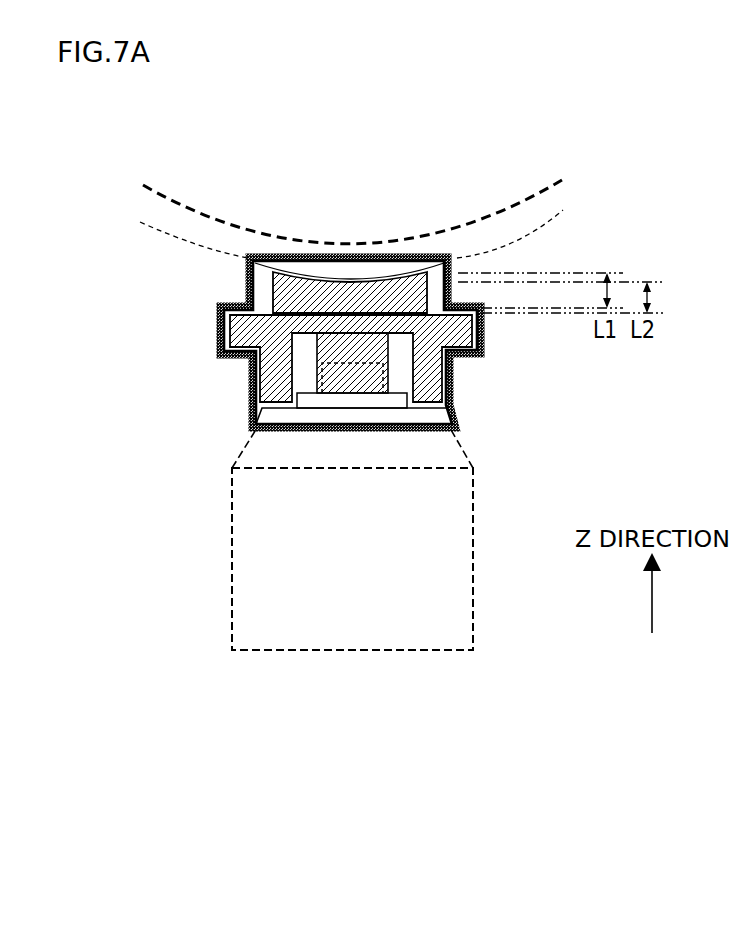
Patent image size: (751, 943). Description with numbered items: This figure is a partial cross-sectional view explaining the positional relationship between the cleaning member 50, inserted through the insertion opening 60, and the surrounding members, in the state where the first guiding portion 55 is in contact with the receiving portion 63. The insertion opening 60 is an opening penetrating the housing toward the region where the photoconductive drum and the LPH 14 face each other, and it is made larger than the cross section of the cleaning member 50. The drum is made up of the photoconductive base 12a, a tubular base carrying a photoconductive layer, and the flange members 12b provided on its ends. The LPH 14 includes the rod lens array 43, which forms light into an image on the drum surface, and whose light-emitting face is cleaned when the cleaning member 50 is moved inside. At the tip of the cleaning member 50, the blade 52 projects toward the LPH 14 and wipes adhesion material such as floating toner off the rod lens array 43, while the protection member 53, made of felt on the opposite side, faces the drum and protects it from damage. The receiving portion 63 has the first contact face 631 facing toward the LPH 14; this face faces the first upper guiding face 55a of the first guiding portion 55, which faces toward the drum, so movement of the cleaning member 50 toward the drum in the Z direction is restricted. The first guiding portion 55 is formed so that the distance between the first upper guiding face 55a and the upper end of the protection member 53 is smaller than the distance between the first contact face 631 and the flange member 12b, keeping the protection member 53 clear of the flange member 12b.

The photoconductive base 12a is at (553, 189).
The flange member 12b is at (435, 263).
The LPH 14 is at (505, 574).
The rod lens array 43 is at (320, 376).
The cleaning member 50 is at (427, 425).
The blade 52 is at (317, 352).
The protection member 53 is at (273, 280).
The first guiding portion 55 is at (213, 328).
The first upper guiding face 55a is at (237, 342).
The insertion opening 60 is at (450, 397).
The receiving portion 63 is at (231, 369).
The first contact face 631 is at (233, 342).